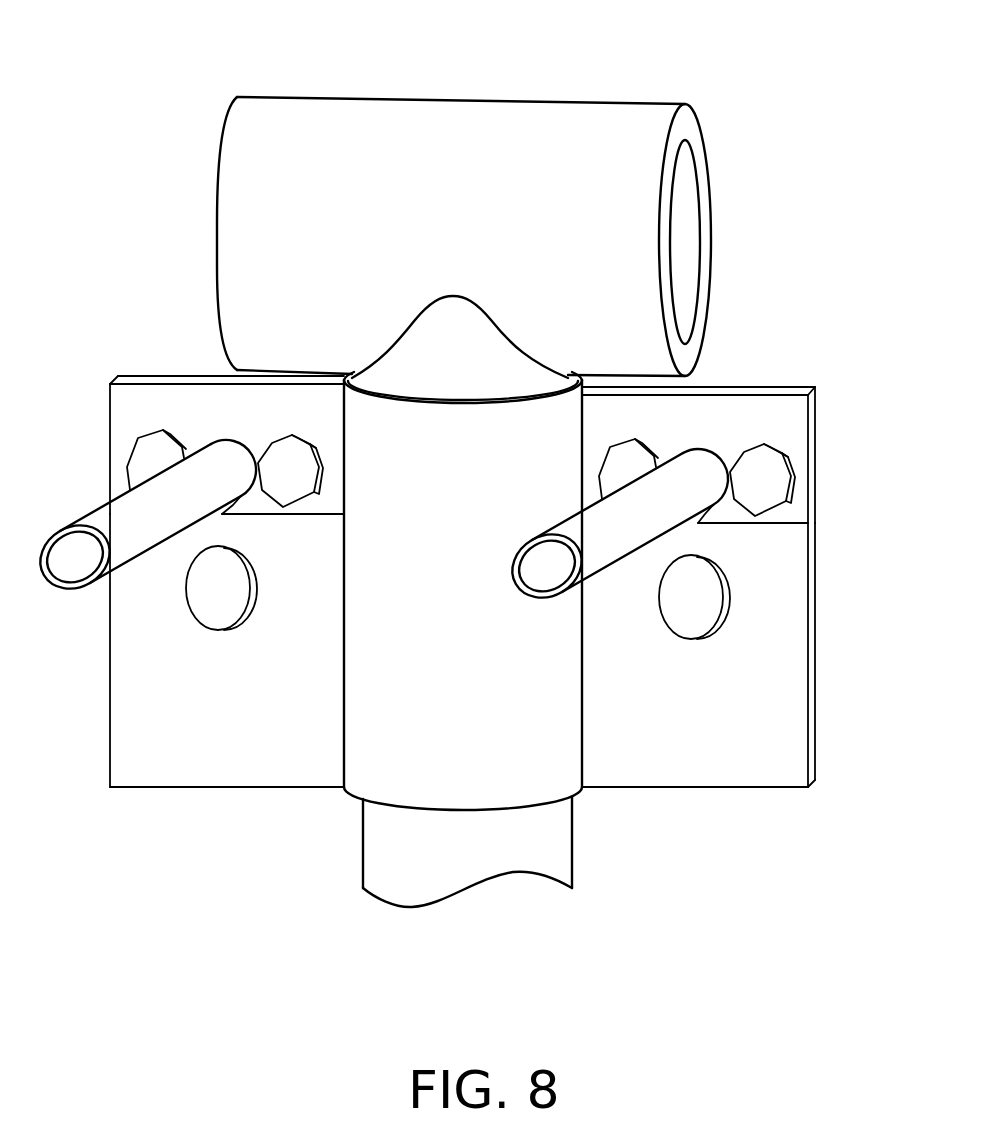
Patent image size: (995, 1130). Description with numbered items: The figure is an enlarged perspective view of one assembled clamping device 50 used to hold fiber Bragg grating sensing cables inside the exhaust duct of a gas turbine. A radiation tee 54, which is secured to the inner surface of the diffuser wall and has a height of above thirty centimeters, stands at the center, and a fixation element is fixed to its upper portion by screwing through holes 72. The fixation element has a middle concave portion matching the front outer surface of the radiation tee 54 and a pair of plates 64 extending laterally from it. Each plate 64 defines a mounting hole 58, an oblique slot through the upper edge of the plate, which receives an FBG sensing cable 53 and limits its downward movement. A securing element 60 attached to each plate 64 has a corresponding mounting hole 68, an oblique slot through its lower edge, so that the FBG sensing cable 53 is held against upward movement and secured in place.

The clamping device 50 is at (288, 65).
The FBG sensing cable 53 is at (114, 527).
The radiation tee 54 is at (552, 825).
The mounting hole 58 is at (225, 437).
The securing element 60 is at (797, 415).
The plate 64 is at (763, 712).
The mounting hole 68 is at (224, 508).
The hole 72 is at (207, 627).